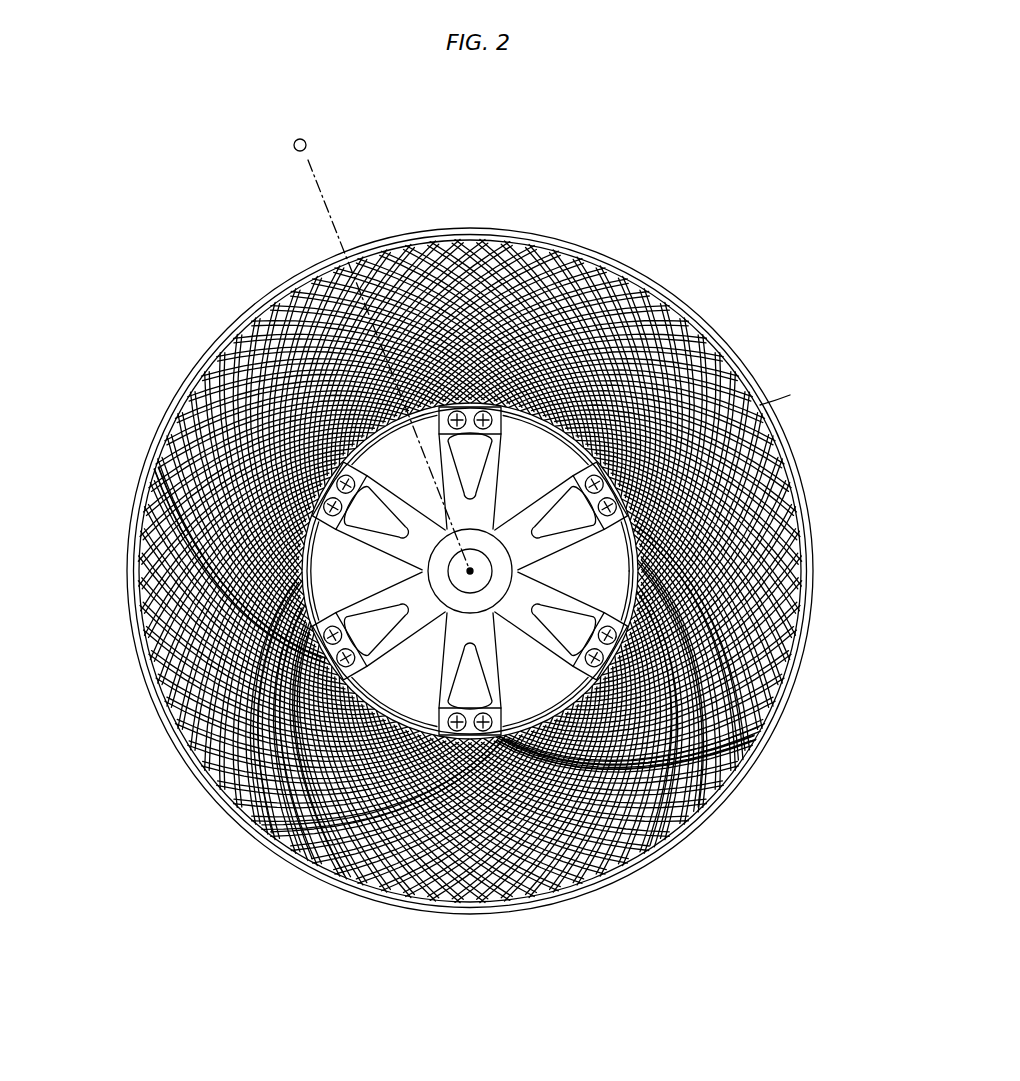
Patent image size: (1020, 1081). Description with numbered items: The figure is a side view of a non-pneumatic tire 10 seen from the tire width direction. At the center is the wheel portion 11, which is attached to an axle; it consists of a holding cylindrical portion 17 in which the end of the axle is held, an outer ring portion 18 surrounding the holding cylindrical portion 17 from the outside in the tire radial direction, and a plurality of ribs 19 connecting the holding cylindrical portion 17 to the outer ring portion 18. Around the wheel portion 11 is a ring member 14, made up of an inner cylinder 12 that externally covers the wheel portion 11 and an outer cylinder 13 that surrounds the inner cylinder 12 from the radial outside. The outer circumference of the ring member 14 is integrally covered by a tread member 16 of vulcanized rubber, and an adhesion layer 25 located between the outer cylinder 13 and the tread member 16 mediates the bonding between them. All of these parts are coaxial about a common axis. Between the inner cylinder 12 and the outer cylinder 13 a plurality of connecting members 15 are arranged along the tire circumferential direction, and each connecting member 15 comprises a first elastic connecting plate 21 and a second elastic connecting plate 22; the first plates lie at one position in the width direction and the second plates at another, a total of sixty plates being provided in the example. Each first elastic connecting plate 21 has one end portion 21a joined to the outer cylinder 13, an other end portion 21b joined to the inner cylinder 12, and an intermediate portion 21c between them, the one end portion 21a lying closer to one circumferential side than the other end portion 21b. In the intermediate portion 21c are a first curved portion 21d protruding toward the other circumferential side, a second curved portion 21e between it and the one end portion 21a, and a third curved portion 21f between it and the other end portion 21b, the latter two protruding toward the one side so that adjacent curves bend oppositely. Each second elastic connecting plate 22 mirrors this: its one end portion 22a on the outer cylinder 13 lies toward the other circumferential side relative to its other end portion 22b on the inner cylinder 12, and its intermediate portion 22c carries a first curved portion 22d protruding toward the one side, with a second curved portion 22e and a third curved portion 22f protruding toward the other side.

The non-pneumatic tire 10 is at (711, 238).
The wheel portion 11 is at (855, 485).
The inner cylinder 12 is at (520, 412).
The outer cylinder 13 is at (628, 276).
The ring member 14 is at (665, 165).
The connecting member 15 is at (178, 213).
The tread member 16 is at (470, 228).
The holding cylindrical portion 17 is at (632, 553).
The outer ring portion 18 is at (695, 528).
The rib 19 is at (690, 594).
The first elastic connecting plate 21 is at (302, 313).
The second elastic connecting plate 22 is at (263, 340).
The one end portion 21a is at (343, 868).
The other end portion 21b is at (310, 602).
The intermediate portion 21c is at (258, 770).
The first curved portion 21d is at (745, 735).
The second curved portion 21e is at (747, 740).
The third curved portion 21f is at (627, 767).
The one end portion 22a is at (165, 490).
The other end portion 22b is at (323, 660).
The intermediate portion 22c is at (273, 827).
The first curved portion 22d is at (700, 775).
The second curved portion 22e is at (752, 768).
The third curved portion 22f is at (667, 790).
The adhesion layer 25 is at (772, 413).